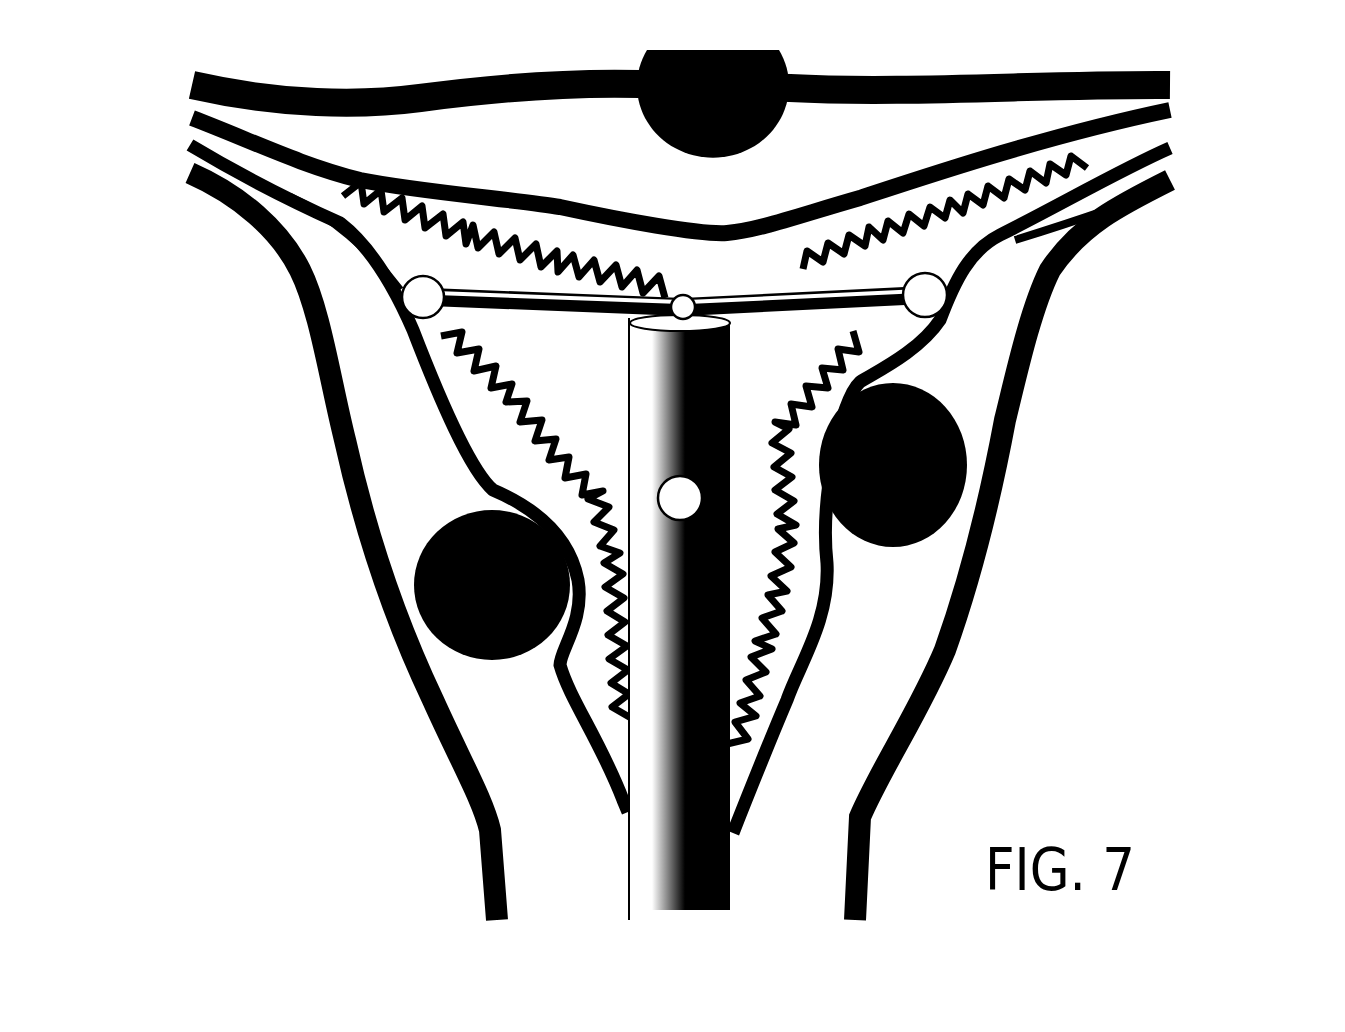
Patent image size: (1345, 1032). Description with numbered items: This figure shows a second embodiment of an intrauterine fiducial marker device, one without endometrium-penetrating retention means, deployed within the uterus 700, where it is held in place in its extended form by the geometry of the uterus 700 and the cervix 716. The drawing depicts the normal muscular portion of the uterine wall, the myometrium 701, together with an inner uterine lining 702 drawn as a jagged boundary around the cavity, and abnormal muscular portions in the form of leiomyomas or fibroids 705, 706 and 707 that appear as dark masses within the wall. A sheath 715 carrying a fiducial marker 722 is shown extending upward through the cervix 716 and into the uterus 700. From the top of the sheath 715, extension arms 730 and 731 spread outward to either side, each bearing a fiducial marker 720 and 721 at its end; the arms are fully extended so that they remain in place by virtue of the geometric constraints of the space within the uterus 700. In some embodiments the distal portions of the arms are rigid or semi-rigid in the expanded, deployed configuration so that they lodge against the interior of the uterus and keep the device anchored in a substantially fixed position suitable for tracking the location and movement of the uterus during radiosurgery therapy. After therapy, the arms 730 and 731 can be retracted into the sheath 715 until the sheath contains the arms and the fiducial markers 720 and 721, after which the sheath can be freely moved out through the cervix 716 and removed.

The uterus 700 is at (1043, 347).
The myometrium 701 is at (933, 550).
The endometrium 702 is at (830, 603).
The leiomyoma (fibroid) 705 is at (967, 447).
The leiomyoma (fibroid) 706 is at (413, 577).
The leiomyoma (fibroid) 707 is at (652, 52).
The sheath 715 is at (700, 747).
The cervix 716 is at (686, 298).
The fiducial marker 720 is at (402, 294).
The fiducial marker 721 is at (942, 283).
The fiducial marker 722 is at (660, 494).
The extension arm 730 is at (556, 321).
The extension arm 731 is at (804, 320).